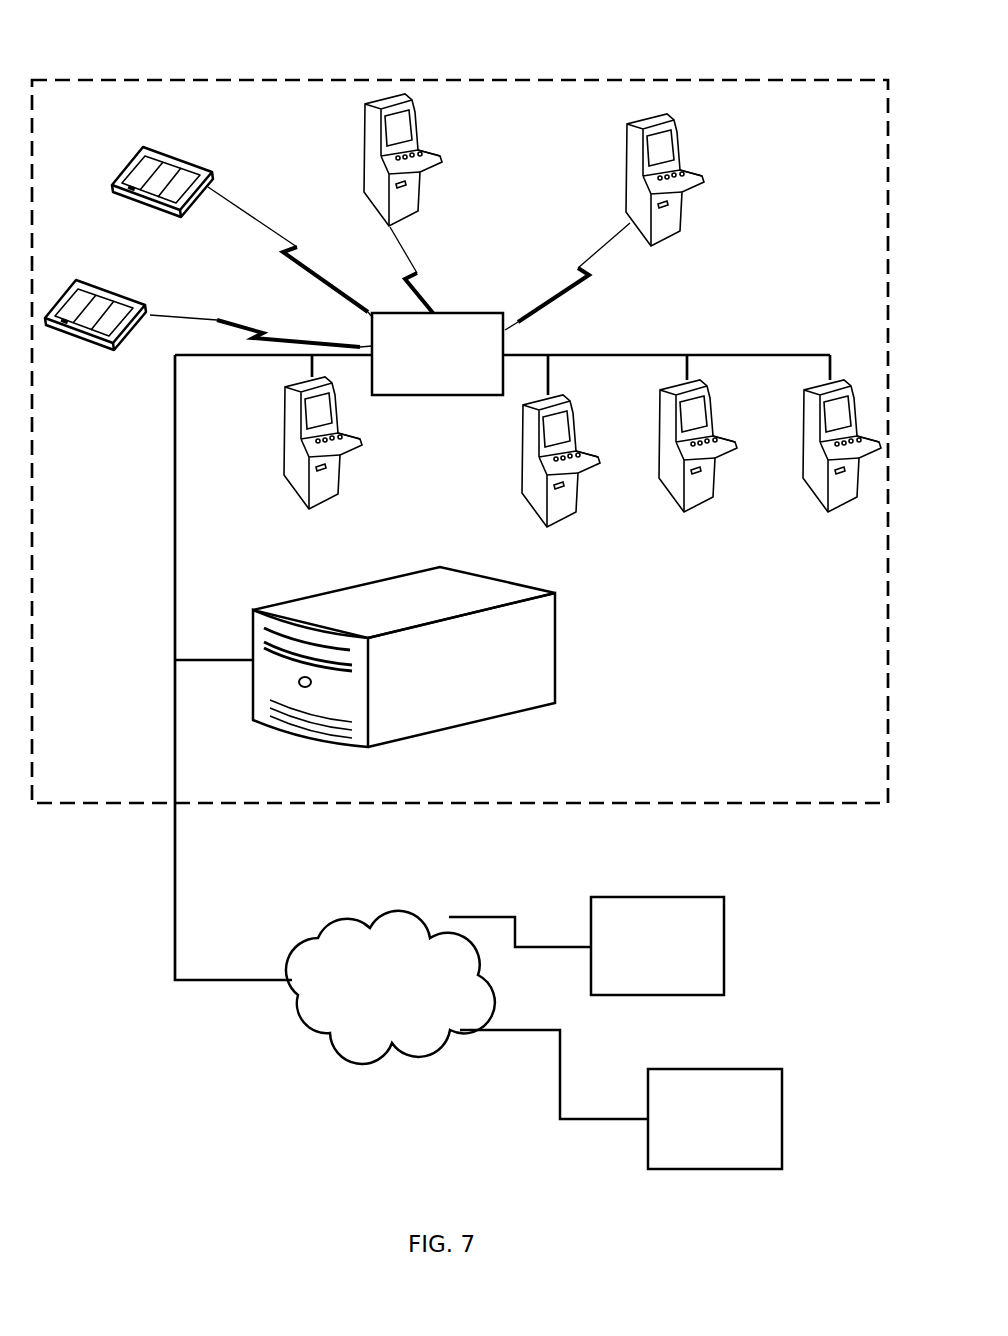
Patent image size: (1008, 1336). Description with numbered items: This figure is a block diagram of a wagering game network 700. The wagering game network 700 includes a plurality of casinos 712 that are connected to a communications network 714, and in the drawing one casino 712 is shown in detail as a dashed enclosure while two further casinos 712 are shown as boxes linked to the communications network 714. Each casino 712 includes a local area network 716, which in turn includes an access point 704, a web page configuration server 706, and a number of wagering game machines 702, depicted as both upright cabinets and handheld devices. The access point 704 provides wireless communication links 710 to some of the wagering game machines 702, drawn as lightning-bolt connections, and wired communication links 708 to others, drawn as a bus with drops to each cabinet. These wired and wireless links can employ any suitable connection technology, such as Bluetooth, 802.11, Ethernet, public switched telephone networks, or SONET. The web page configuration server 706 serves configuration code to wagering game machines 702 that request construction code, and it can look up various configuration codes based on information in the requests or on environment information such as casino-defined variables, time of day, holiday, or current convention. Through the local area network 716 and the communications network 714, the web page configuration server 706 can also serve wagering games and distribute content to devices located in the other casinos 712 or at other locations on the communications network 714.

The wagering game network 700 is at (146, 14).
The wagering game machines 702 is at (212, 160).
The access point 704 is at (445, 398).
The web page configuration server 706 is at (567, 647).
The wired communication links 708 is at (757, 348).
The wireless communication links 710 is at (303, 252).
The casinos 712 is at (726, 952).
The communications network 714 is at (378, 898).
The local area network 716 is at (126, 614).